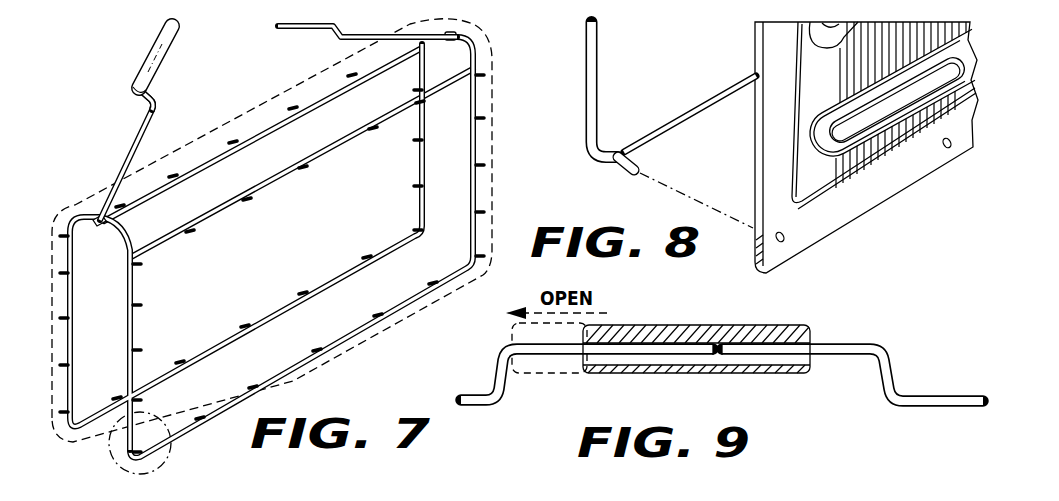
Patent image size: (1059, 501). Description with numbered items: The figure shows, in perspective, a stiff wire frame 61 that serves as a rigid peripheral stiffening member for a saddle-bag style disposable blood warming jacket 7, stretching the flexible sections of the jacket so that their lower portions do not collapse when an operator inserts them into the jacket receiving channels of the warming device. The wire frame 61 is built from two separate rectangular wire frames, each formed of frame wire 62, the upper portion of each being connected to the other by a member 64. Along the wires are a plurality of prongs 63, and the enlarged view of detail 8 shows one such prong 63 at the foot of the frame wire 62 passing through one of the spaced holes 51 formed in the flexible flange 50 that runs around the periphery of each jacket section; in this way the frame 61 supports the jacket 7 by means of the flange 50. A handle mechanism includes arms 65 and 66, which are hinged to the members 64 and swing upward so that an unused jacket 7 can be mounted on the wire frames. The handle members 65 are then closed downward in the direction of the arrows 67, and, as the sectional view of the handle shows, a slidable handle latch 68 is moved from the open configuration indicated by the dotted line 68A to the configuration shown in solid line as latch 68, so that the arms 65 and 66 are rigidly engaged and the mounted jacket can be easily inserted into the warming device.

In FIG. 7, the blood warming jacket 7 is at (284, 96).
In FIG. 8, the blood warming jacket 7 is at (905, 186).
In FIG. 7, the detail 8 is at (175, 452).
In FIG. 8, the flexible flange 50 is at (833, 227).
In FIG. 8, the spaced holes 51 is at (791, 243).
In FIG. 7, the wire frame 61 is at (305, 247).
In FIG. 7, the frame wire 62 is at (130, 343).
In FIG. 8, the frame wire 62 is at (585, 125).
In FIG. 7, the prongs 63 is at (250, 200).
In FIG. 8, the prongs 63 is at (630, 174).
In FIG. 7, the connecting member 64 is at (122, 244).
In FIG. 7, the handle arm 65 is at (150, 111).
In FIG. 9, the handle arm 65 is at (503, 389).
In FIG. 9, the handle arm 66 is at (868, 360).
In FIG. 7, the arrows 67 is at (159, 148).
In FIG. 7, the slidable handle latch 68 is at (170, 55).
In FIG. 9, the slidable handle latch 68 is at (630, 374).
In FIG. 9, the latch open position 68A is at (550, 378).